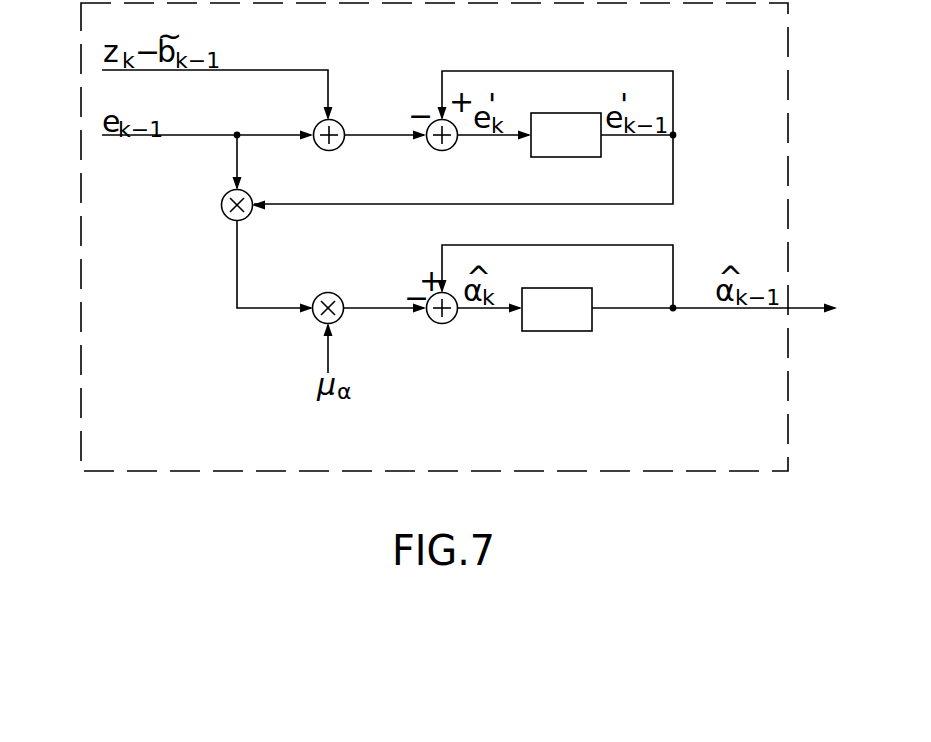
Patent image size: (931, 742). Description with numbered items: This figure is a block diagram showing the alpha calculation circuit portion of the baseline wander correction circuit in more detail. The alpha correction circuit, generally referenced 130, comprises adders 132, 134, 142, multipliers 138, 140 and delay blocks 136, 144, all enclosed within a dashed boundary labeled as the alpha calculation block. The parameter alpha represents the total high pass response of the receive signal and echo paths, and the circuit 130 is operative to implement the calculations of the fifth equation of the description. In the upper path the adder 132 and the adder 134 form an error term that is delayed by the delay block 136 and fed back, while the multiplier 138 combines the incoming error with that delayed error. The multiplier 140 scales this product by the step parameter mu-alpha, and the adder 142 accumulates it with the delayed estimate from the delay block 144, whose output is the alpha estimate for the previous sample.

The alpha calculation circuit 130 is at (218, 477).
The adder 132 is at (343, 121).
The adder 134 is at (447, 150).
The delay block 136 is at (570, 158).
The multiplier 138 is at (221, 207).
The multiplier 140 is at (328, 292).
The adder 142 is at (445, 323).
The delay block 144 is at (562, 331).